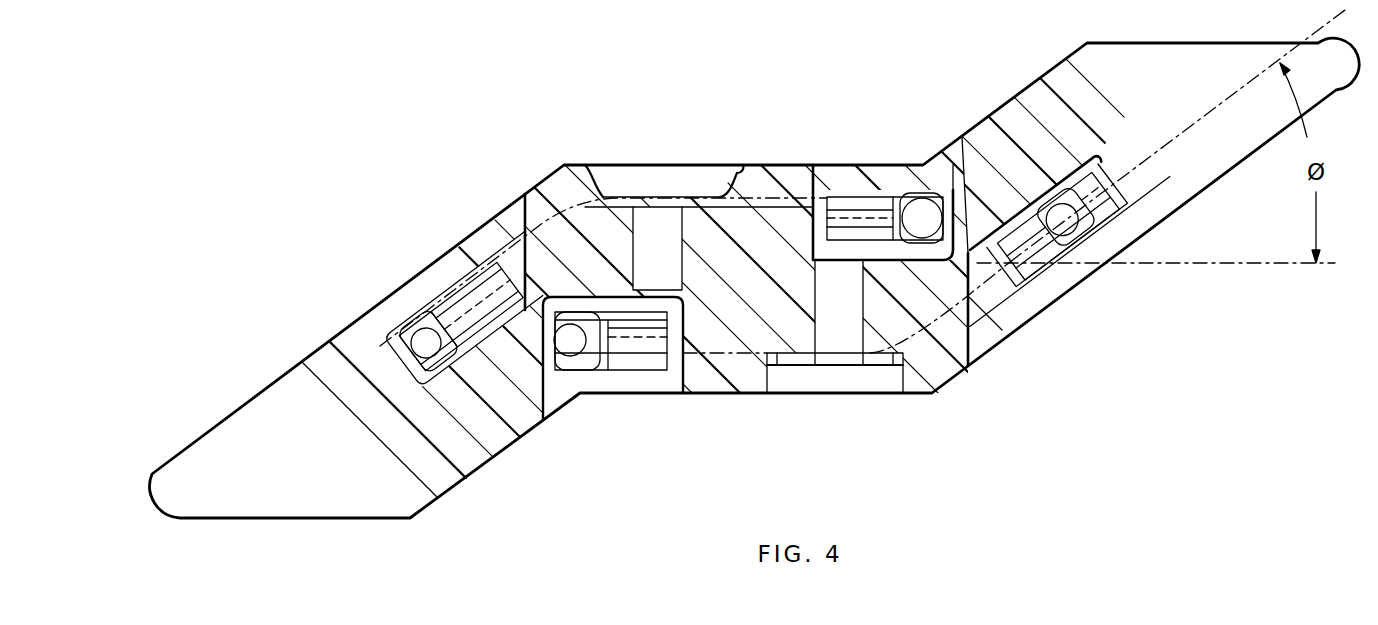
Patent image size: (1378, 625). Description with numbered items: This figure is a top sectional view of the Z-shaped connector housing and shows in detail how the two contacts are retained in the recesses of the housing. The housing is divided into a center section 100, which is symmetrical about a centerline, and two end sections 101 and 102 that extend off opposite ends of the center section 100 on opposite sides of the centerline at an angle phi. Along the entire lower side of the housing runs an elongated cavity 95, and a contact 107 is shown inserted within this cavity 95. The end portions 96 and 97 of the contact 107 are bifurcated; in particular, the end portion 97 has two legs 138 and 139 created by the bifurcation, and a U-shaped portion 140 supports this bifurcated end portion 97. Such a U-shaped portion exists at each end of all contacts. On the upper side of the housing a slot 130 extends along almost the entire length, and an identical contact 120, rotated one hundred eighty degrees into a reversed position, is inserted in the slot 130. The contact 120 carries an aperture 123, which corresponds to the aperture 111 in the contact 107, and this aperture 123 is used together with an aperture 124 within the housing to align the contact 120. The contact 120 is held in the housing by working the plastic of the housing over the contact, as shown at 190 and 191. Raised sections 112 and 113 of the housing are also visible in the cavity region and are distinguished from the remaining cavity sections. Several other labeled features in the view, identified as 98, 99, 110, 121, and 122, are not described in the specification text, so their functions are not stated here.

The cavity 95 is at (1020, 317).
The end portion 96 is at (602, 357).
The end portion 97 is at (1047, 267).
The piston ball 98 is at (553, 343).
The piston cap 99 is at (1085, 197).
The center section 100 is at (787, 345).
The end section 101 is at (493, 452).
The end section 102 is at (1107, 183).
The contact 107 is at (793, 365).
The pin 110 is at (855, 310).
The aperture 111 is at (858, 363).
The raised section 112 is at (712, 383).
The raised section 113 is at (952, 378).
The contact 120 is at (655, 192).
The left arm 121 is at (455, 275).
The cylinder housing 122 is at (893, 180).
The aperture 123 is at (680, 196).
The aperture 124 is at (673, 273).
The slot 130 is at (505, 218).
The leg 138 is at (1085, 192).
The leg 139 is at (1117, 225).
The U-shaped portion 140 is at (1033, 247).
The worked plastic 190 is at (591, 167).
The worked plastic 191 is at (748, 165).